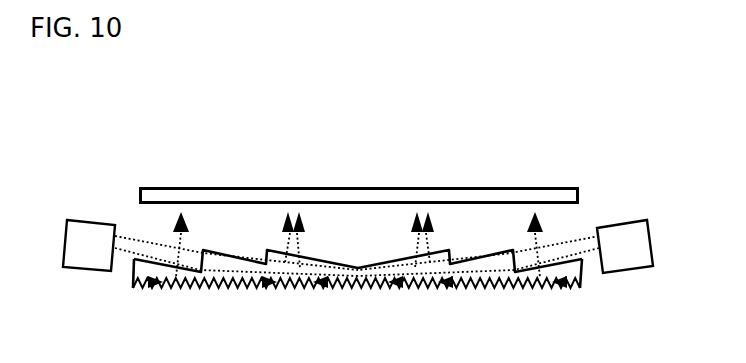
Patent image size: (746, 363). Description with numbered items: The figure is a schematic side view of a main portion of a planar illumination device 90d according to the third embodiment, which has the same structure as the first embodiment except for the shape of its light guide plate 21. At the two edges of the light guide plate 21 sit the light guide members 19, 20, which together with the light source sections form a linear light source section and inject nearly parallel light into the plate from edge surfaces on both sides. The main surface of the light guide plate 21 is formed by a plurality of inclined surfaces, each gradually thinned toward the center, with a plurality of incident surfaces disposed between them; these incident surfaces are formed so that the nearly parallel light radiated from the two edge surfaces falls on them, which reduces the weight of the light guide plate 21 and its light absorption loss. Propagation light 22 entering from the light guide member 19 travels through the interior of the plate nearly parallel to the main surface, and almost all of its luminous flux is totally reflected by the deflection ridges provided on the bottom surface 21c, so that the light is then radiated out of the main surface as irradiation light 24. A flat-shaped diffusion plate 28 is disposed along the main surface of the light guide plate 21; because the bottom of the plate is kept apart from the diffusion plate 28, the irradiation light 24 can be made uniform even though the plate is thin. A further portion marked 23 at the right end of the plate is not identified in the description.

The planar illumination device 90d is at (128, 122).
The light guide member 19 is at (85, 220).
The light guide member 20 is at (627, 222).
The diffusion plate 28 is at (462, 187).
The light guide plate 21 is at (557, 262).
The bottom surface 21c is at (470, 288).
The propagation light 22 is at (137, 252).
The second light incident end of light guide 23 is at (580, 255).
The irradiation light 24 is at (415, 243).